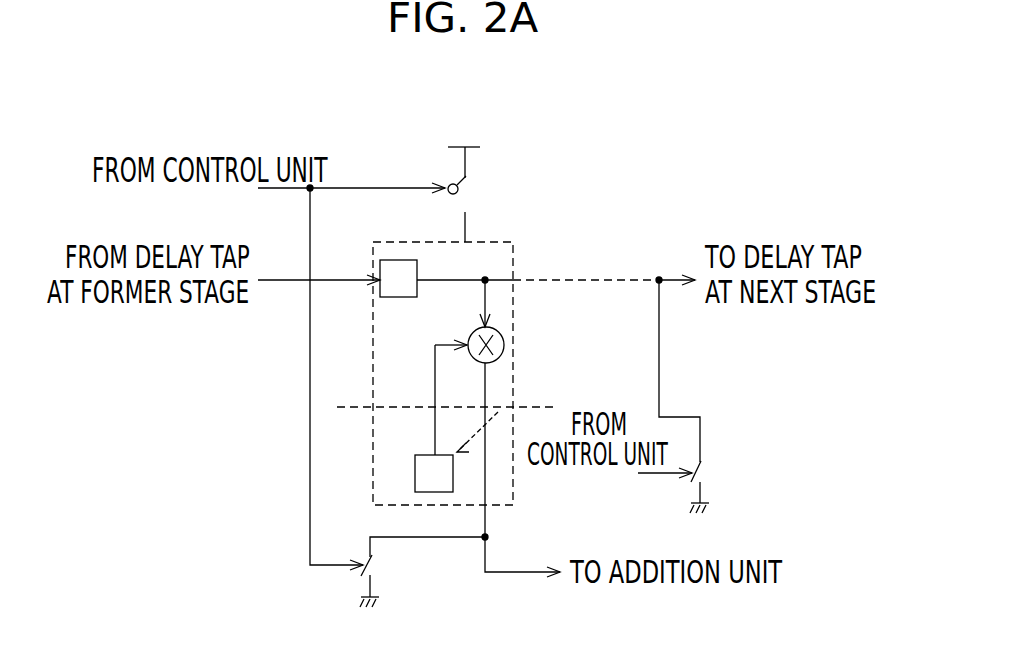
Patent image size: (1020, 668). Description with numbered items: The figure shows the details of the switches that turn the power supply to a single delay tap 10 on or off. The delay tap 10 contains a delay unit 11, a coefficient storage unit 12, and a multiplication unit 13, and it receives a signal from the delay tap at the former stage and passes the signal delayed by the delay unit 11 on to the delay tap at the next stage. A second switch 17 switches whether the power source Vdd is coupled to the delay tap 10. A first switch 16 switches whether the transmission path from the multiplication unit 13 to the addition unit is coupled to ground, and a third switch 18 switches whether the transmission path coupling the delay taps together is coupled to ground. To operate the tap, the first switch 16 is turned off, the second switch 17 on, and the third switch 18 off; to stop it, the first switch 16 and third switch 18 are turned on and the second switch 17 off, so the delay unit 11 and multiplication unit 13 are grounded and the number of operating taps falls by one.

The delay tap 10 is at (513, 242).
The delay unit 11 is at (399, 297).
The coefficient storage unit 12 is at (415, 455).
The multiplication unit 13 is at (468, 335).
The first switch 16 is at (376, 560).
The second switch 17 is at (460, 183).
The third switch 18 is at (704, 467).